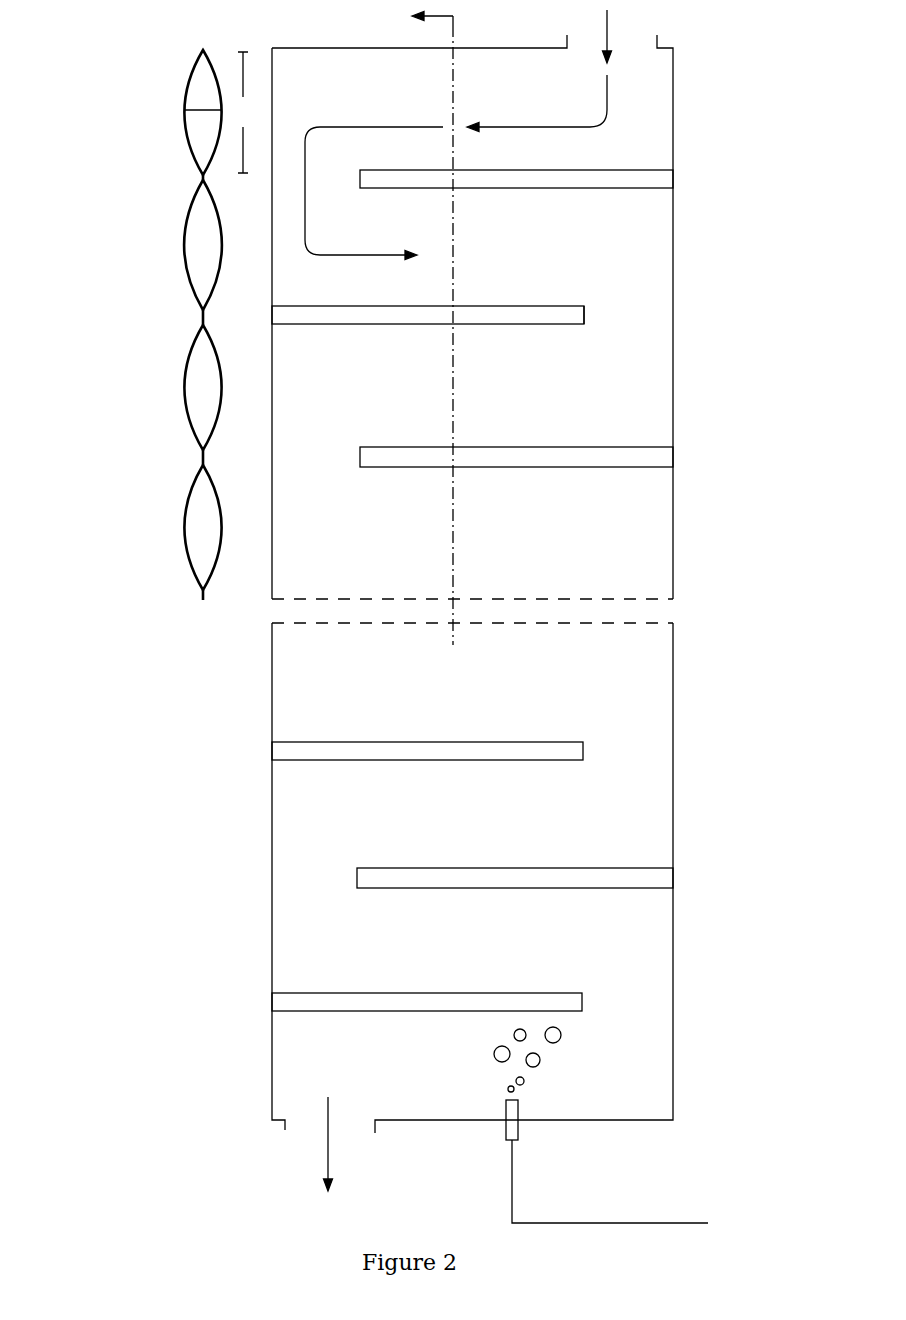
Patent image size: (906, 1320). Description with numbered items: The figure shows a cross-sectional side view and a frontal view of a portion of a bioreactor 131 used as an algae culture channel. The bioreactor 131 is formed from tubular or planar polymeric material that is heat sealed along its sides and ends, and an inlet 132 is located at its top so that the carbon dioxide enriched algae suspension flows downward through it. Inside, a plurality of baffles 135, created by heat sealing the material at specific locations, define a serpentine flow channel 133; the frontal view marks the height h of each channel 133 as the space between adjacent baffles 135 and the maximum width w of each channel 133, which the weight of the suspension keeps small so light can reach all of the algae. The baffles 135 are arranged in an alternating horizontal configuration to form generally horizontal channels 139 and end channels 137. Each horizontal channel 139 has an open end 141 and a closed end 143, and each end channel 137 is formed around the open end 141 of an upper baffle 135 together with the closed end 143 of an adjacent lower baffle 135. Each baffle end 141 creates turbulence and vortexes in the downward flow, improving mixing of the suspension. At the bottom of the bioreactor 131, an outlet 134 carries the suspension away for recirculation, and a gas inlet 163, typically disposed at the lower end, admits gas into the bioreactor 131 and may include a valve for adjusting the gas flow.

The bioreactor 131 is at (124, 456).
The inlet 132 is at (567, 38).
The flow channel 133 is at (182, 251).
The outlet 134 is at (285, 1130).
The baffle 135 is at (203, 178).
The end channel 137 is at (633, 317).
The horizontal channel 139 is at (503, 230).
The open end 141 is at (585, 318).
The closed end 143 is at (643, 455).
The gas inlet 163 is at (518, 1130).